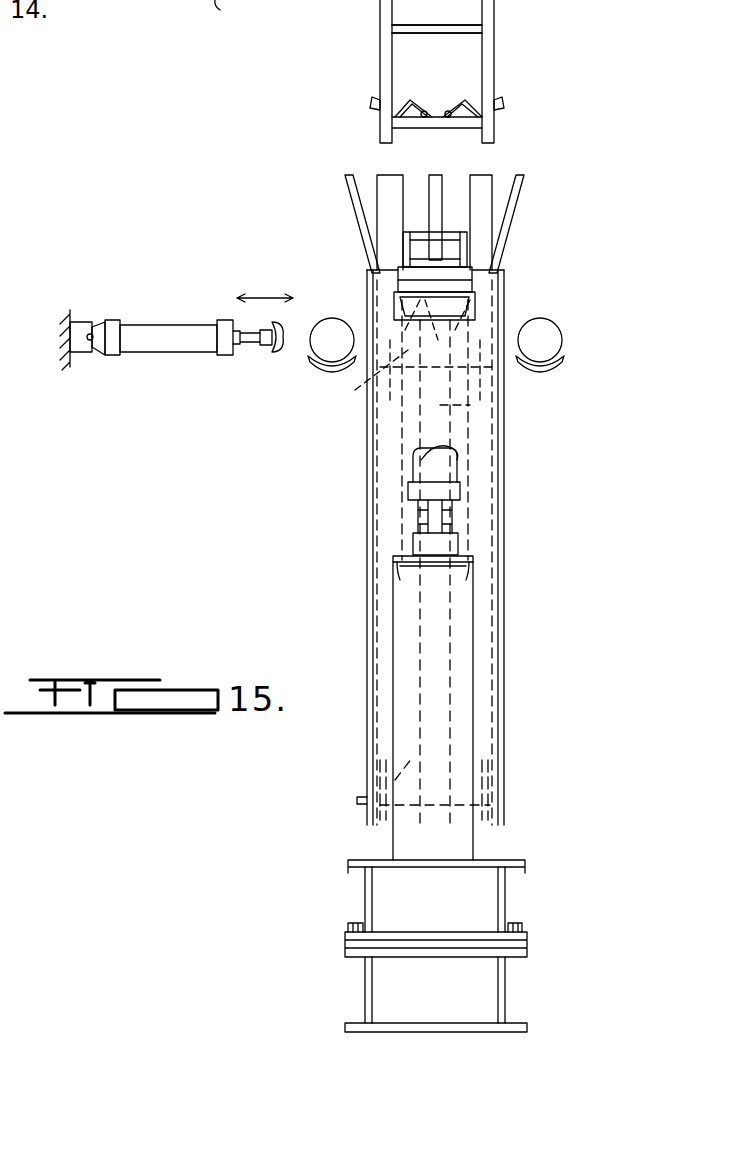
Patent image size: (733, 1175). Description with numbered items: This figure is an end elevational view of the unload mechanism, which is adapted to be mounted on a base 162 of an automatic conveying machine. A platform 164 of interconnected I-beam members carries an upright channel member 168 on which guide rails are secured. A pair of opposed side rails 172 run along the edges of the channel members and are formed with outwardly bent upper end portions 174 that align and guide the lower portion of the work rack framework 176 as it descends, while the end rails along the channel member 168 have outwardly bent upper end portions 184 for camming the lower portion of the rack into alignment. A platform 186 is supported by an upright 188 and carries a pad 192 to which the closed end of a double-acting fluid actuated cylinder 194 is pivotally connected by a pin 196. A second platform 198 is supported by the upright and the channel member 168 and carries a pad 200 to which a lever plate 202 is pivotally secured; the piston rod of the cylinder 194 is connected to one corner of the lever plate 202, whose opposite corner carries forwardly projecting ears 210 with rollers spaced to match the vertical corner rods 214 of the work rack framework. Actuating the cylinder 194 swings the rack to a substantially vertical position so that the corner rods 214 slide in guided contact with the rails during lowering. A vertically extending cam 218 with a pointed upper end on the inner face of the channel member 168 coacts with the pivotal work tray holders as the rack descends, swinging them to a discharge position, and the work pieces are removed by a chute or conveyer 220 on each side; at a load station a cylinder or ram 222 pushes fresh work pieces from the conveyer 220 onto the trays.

The base 162 is at (508, 990).
The platform 164 is at (508, 890).
The channel member 168 is at (388, 515).
The side rails 172 is at (502, 69).
The outwardly bent upper end portions 174 is at (529, 190).
The work rack framework 176 is at (398, 400).
The outwardly bent upper end portions 184 is at (495, 178).
The platform 186 is at (474, 558).
The upright 188 is at (470, 711).
The pad 192 is at (458, 531).
The double-acting fluid actuated cylinder 194 is at (448, 462).
The pin 196 is at (482, 500).
The second platform 198 is at (500, 296).
The pad 200 is at (492, 276).
The lever plate 202 is at (440, 183).
The ears 210 is at (239, 10).
The vertical corner rods 214 is at (487, 44).
The cam 218 is at (490, 404).
The chute or conveyer 220 is at (560, 364).
The cylinder or ram 222 is at (157, 340).